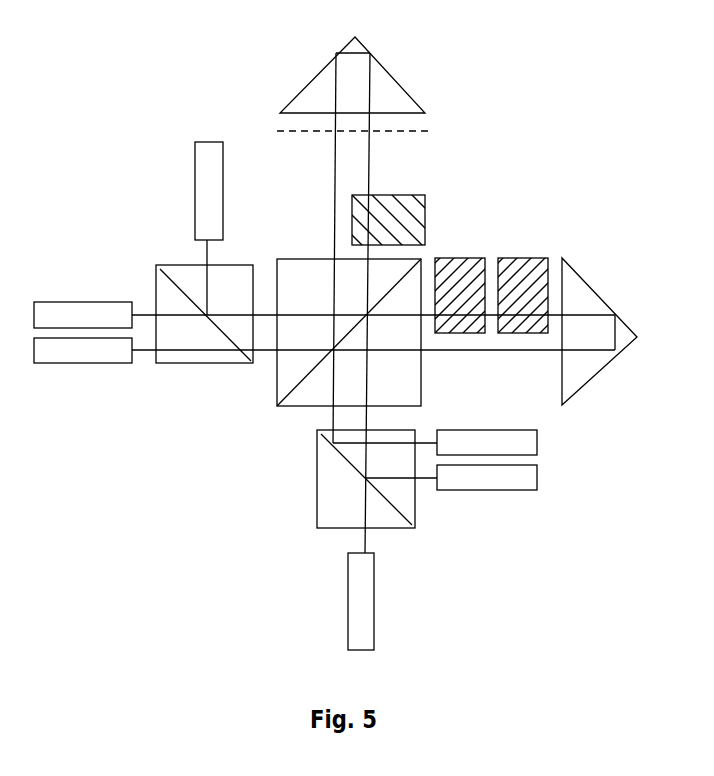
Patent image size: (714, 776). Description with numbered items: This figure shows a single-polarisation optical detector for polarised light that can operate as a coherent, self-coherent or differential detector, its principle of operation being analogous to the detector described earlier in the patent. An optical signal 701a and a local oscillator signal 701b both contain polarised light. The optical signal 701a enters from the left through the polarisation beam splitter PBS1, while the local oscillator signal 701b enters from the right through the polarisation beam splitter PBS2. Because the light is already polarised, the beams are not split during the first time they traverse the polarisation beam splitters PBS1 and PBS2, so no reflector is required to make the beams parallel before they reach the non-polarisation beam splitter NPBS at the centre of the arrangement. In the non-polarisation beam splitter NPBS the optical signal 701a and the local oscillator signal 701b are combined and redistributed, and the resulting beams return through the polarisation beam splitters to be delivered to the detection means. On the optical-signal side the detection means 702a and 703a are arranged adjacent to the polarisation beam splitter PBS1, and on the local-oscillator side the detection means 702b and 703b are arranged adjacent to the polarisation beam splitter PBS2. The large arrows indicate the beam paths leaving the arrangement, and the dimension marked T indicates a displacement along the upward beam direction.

The optical signal 701a is at (83, 350).
The detection means 702a is at (83, 315).
The detection means 703a is at (209, 191).
The local oscillator signal 701b is at (487, 442).
The detection means 702b is at (361, 601).
The detection means 703b is at (487, 477).
The polarisation beam splitter PBS1 is at (204, 314).
The polarisation beam splitter PBS2 is at (366, 479).
The non-polarisation beam splitter NPBS is at (349, 332).
The translation distance T is at (459, 84).